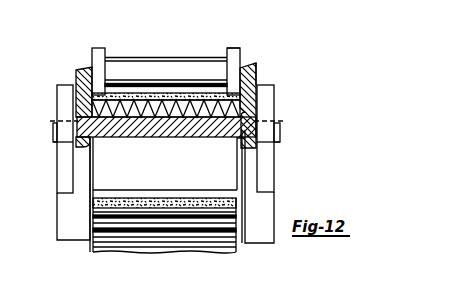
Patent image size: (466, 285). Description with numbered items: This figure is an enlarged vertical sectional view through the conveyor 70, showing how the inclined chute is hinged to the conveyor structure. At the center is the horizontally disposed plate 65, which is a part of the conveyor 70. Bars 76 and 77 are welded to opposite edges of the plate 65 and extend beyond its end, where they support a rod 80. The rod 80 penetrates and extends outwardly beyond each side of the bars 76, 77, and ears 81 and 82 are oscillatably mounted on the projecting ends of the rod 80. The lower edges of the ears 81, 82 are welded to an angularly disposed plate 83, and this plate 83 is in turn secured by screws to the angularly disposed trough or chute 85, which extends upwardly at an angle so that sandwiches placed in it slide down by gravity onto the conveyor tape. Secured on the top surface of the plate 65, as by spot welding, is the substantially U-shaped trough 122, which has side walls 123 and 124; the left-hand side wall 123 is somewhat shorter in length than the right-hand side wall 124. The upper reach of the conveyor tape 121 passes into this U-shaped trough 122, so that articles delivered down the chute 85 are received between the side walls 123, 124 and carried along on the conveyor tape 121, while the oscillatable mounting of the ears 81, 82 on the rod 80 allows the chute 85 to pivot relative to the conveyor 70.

The plate 65 is at (162, 131).
The conveyor 70 is at (251, 63).
The bar 76 is at (84, 149).
The bar 77 is at (242, 163).
The rod 80 is at (280, 125).
The ear 81 is at (62, 99).
The ear 82 is at (273, 94).
The angularly disposed plate 83 is at (63, 204).
The trough or chute 85 is at (240, 53).
The conveyor tape 121 is at (186, 95).
The U-shaped trough 122 is at (137, 94).
The side wall 123 is at (78, 76).
The side wall 124 is at (256, 70).